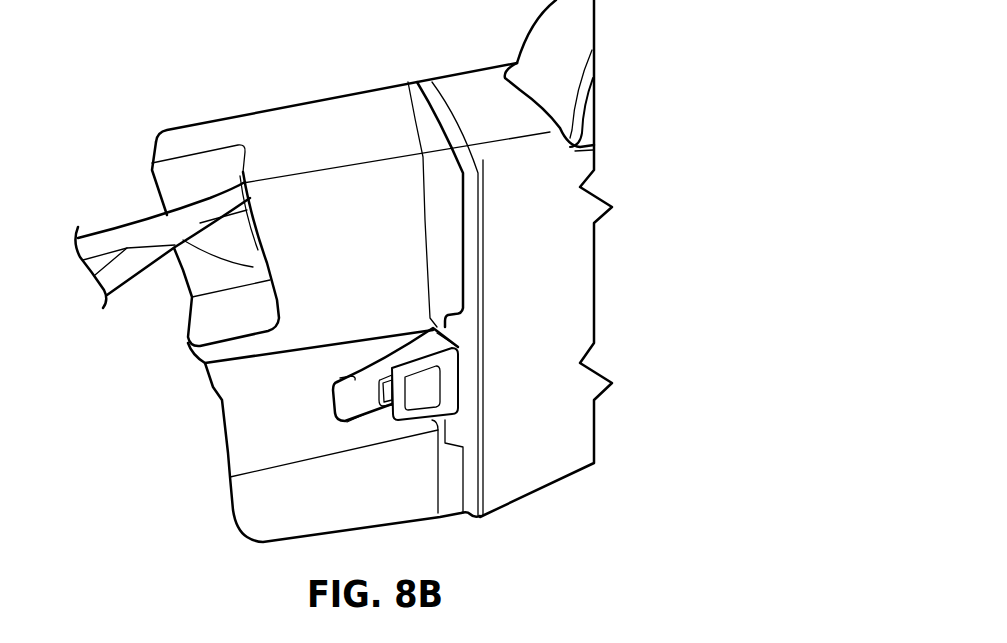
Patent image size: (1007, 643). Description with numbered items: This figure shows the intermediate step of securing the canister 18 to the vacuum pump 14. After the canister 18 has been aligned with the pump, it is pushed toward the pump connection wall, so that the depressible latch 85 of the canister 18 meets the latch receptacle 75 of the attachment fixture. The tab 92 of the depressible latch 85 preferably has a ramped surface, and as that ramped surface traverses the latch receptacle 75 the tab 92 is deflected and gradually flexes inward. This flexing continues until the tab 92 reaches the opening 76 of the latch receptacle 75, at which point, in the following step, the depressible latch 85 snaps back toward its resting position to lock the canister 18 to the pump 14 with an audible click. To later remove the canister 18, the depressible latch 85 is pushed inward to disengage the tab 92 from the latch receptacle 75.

The vacuum pump 14 is at (547, 263).
The canister 18 is at (302, 130).
The latch receptacle 75 is at (450, 357).
The opening 76 is at (438, 404).
The depressible latch 85 is at (365, 410).
The tab 92 is at (334, 396).